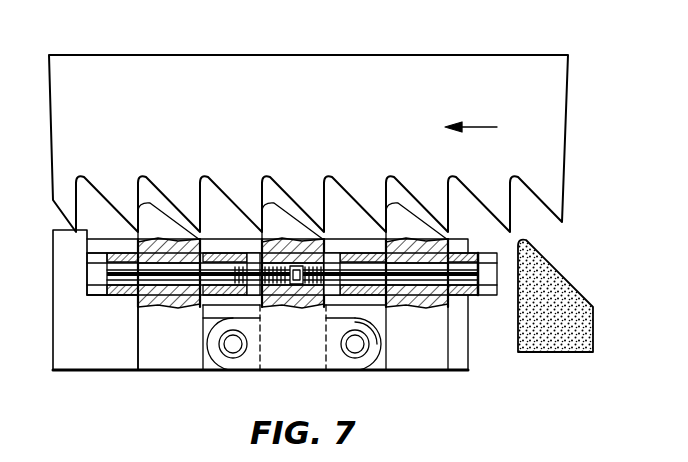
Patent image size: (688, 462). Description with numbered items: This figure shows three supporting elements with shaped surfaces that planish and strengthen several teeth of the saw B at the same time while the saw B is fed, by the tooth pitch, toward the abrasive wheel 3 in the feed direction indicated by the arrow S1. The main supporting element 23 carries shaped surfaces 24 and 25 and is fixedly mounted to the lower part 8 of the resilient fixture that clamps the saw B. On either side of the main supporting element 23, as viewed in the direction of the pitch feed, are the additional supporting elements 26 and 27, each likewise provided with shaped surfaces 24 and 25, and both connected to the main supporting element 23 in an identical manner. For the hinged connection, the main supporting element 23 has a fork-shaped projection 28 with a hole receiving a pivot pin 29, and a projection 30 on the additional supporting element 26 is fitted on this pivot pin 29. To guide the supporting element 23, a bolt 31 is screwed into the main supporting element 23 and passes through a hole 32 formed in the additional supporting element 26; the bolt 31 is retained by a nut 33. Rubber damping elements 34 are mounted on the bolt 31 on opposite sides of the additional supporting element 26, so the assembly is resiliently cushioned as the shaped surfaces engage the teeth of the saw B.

The saw B is at (373, 74).
The direction of blade movement S1 is at (477, 118).
The abrasive wheel 3 is at (546, 344).
The lower part 8 is at (88, 362).
The main supporting element 23 is at (305, 357).
The shaped surface 24 is at (166, 203).
The shaped surface 25 is at (137, 206).
The additional supporting element 26 is at (437, 358).
The additional supporting element 27 is at (184, 361).
The fork-shaped projection 28 is at (360, 362).
The pivot pin 29 is at (351, 352).
The projection 30 is at (381, 360).
The bolt 31 is at (408, 290).
The hole 32 is at (418, 304).
The nut 33 is at (337, 300).
The rubber damping elements 34 is at (452, 253).